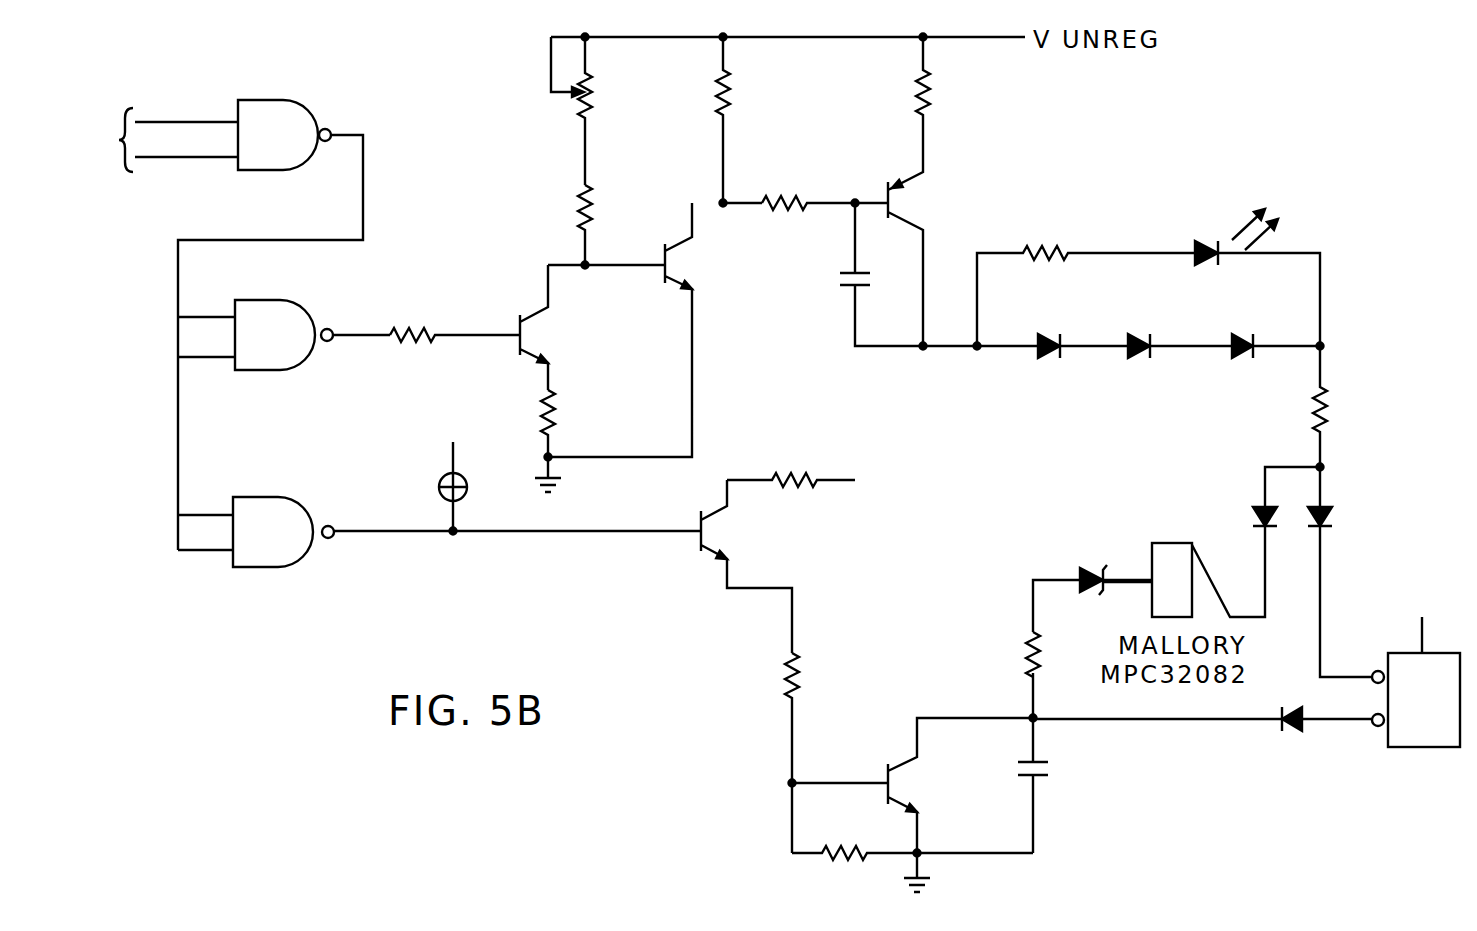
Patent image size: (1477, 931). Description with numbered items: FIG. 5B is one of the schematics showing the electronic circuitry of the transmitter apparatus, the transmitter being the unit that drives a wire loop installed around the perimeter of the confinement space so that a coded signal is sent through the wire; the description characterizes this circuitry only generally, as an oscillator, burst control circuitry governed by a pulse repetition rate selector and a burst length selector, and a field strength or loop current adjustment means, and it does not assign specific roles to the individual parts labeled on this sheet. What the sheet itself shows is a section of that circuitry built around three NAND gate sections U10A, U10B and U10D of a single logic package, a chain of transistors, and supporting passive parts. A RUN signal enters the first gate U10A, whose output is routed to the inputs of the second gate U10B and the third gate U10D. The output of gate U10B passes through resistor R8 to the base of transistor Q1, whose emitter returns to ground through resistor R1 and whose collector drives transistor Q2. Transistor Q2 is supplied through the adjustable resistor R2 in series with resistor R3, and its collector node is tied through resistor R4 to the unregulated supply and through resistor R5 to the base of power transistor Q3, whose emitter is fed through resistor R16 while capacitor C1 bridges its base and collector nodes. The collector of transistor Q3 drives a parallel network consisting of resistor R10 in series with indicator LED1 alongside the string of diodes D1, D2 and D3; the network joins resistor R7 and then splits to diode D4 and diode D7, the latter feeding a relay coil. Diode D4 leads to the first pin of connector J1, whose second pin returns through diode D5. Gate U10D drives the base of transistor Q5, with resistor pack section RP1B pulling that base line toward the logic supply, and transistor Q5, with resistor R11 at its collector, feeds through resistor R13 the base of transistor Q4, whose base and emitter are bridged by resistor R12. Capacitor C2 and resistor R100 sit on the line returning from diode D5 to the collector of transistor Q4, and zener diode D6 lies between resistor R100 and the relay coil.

The NAND gate 74HC00 (RUN input) U10A is at (241, 308).
The NAND gate 74HC00 U10B is at (284, 336).
The NAND gate 74HC00 U10D is at (439, 530).
The resistor 150 ohm R8 is at (454, 336).
The transistor 2N3904 Q1 is at (592, 327).
The resistor 820 ohm R1 is at (613, 390).
The transistor 2N2905A Q2 is at (688, 247).
The potentiometer 500 ohm R2 is at (602, 111).
The resistor 270 ohm R3 is at (615, 223).
The resistor 1K R4 is at (746, 122).
The resistor 10 ohm R5 is at (824, 202).
The transistor TIP42C Q3 is at (959, 233).
The resistor 4.7 ohm 2W R16 is at (973, 79).
The capacitor .1 C1 is at (908, 276).
The resistor 15 ohm R10 is at (1086, 282).
The green LED LED1 is at (1235, 259).
The diode 1N4007 D1 is at (1052, 346).
The diode 1N4007 D2 is at (1160, 358).
The diode 1N4007 D3 is at (1253, 346).
The resistor 10 ohm 5W R7 is at (1366, 408).
The diode 1N4007 D4 is at (1375, 572).
The diode 1N4007 D7 is at (1235, 542).
The connector J1 is at (1416, 682).
The diode 1N4007 D5 is at (1202, 752).
The transistor 2N2220 Q5 is at (774, 566).
The resistor 150 ohm R11 is at (843, 479).
The resistor pack 1K RP1B is at (429, 473).
The resistor 68 ohm R13 is at (822, 750).
The transistor TIP29C Q4 is at (912, 805).
The resistor 100 ohm R12 is at (912, 856).
The capacitor .01 C2 is at (1069, 784).
The resistor 10K R100 is at (1016, 649).
The zener diode 1N751 D6 is at (1103, 580).